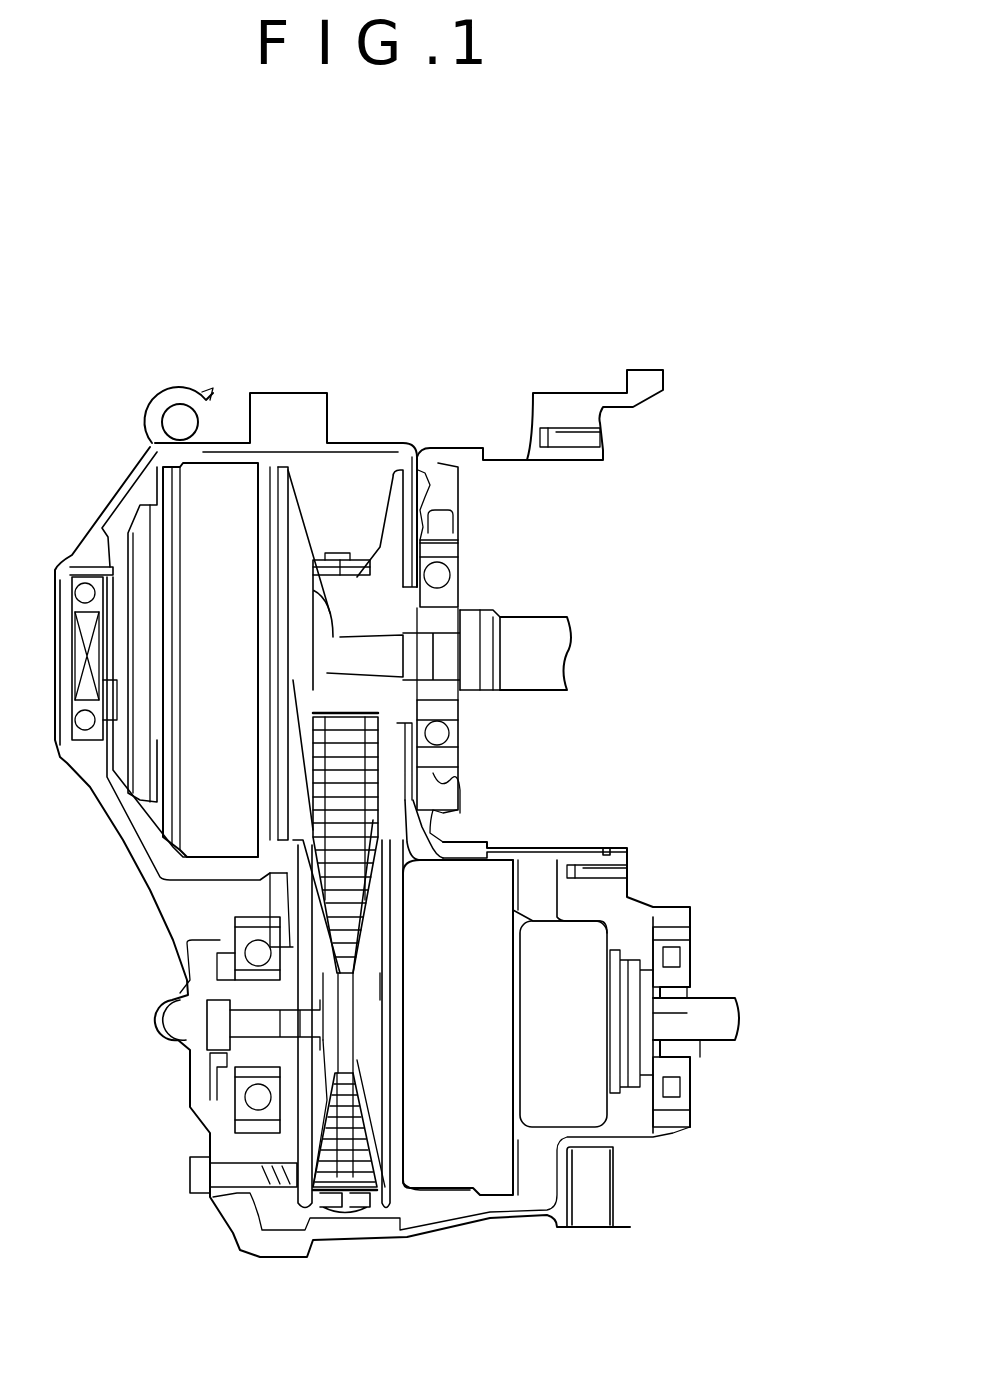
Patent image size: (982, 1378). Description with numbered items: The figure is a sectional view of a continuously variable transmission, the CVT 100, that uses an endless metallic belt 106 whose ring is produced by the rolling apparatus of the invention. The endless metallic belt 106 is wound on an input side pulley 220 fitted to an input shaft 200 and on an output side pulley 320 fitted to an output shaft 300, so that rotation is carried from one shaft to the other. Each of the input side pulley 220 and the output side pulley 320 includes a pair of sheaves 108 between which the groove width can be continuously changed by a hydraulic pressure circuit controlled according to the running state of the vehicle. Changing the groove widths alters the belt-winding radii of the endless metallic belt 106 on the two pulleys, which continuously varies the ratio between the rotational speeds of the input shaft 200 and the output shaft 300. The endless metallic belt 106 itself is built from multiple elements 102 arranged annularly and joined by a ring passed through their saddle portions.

The CVT 100 is at (527, 290).
The elements 102 is at (328, 560).
The endless metallic belt 106 is at (346, 1213).
The sheaves 108 is at (293, 542).
The input shaft 200 is at (538, 630).
The input side pulley 220 is at (388, 520).
The output shaft 300 is at (717, 1005).
The output side pulley 320 is at (307, 1208).